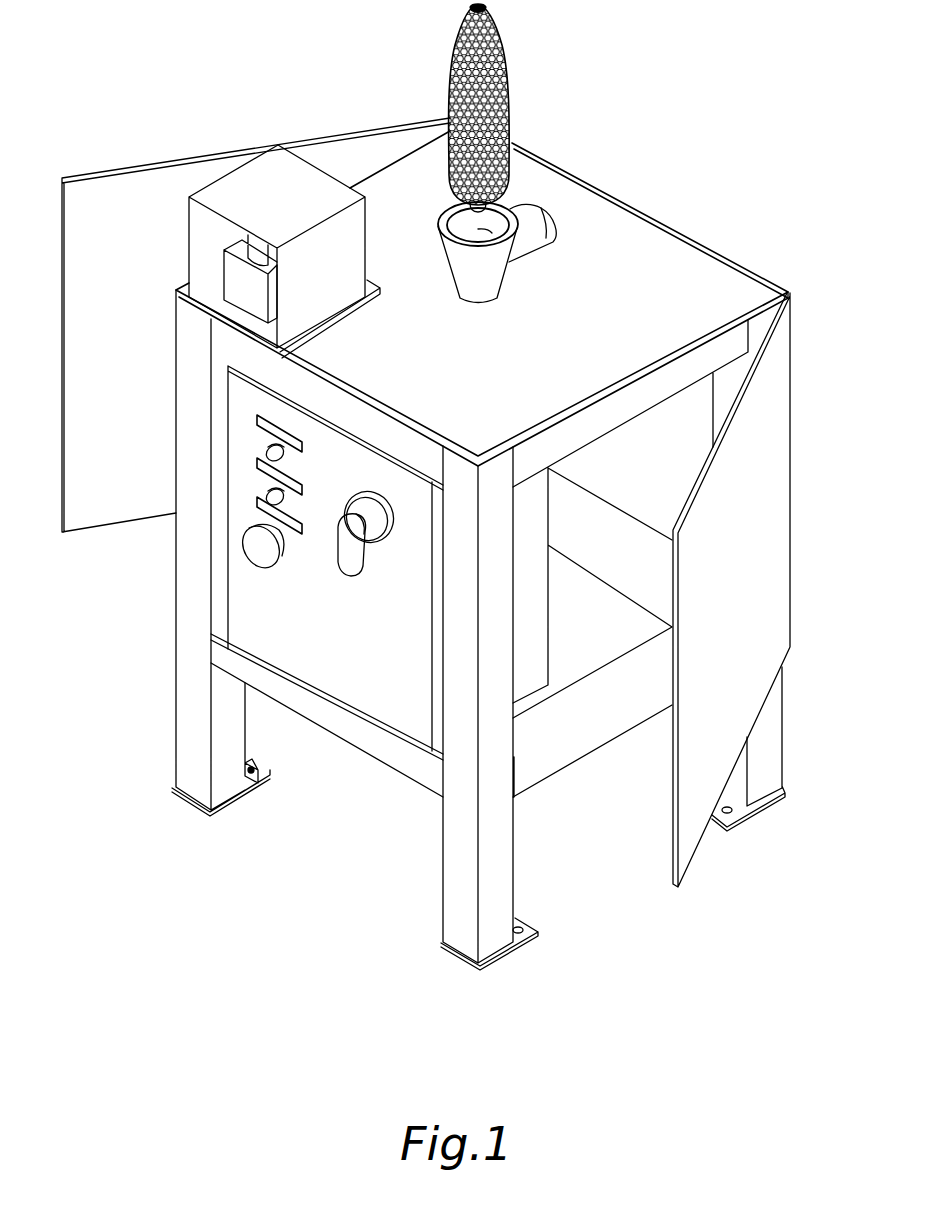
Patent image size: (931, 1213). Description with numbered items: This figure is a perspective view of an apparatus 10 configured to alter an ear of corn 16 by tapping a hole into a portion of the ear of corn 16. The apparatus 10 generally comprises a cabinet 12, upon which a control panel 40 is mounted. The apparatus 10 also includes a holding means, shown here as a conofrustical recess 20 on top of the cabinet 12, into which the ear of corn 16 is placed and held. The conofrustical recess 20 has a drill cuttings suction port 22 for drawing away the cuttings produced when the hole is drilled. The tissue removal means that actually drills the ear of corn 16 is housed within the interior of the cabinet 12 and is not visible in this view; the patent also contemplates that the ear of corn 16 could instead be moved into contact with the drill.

The apparatus 10 is at (689, 55).
The cabinet 12 is at (777, 462).
The ear of corn 16 is at (497, 88).
The conofrustical recess 20 is at (495, 278).
The drill cuttings suction port 22 is at (537, 217).
The control panel 40 is at (287, 610).